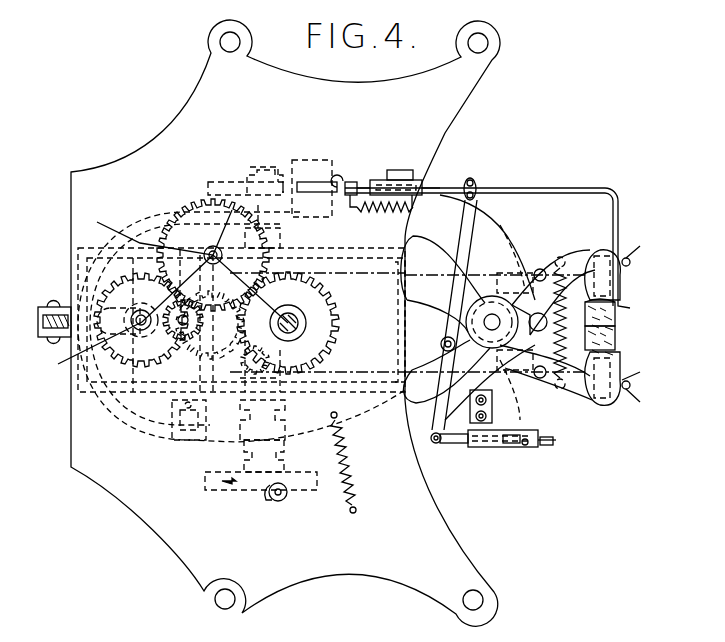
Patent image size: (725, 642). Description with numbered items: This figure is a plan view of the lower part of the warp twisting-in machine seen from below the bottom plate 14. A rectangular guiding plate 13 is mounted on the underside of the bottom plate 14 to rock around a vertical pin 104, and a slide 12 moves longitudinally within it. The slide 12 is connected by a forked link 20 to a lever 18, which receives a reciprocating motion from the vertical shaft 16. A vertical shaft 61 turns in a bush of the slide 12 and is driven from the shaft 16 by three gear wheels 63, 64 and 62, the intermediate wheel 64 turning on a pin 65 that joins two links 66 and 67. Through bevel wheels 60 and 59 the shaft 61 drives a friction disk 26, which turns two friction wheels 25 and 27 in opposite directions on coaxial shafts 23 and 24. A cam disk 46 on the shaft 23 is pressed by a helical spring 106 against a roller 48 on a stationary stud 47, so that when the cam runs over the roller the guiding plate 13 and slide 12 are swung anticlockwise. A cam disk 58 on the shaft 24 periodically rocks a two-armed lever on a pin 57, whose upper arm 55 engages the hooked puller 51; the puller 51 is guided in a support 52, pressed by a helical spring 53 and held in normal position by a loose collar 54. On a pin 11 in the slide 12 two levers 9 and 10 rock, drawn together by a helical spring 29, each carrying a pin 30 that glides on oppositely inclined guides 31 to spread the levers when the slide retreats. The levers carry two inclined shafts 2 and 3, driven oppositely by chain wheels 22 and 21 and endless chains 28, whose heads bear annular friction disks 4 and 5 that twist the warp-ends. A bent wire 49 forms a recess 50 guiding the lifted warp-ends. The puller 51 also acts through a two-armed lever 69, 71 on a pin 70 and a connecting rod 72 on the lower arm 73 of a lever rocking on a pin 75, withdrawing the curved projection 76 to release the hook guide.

The inclined shaft 2 is at (612, 405).
The inclined shaft 3 is at (615, 250).
The friction disk 4 is at (618, 340).
The friction disk 5 is at (620, 316).
The lever 9 is at (572, 385).
The lever 10 is at (575, 262).
The pin 11 is at (484, 318).
The slide 12 is at (428, 280).
The guiding plate 13 is at (80, 252).
The bottom plate 14 is at (426, 127).
The vertical shaft 16 is at (306, 323).
The lever 18 is at (38, 322).
The forked link 20 is at (150, 440).
The chain wheel 21 is at (633, 320).
The chain wheel 22 is at (315, 273).
The shaft 23 is at (245, 452).
The shaft 24 is at (258, 170).
The friction wheel 25 is at (308, 430).
The friction disk 26 is at (215, 340).
The friction wheel 27 is at (310, 248).
The endless chain 28 is at (390, 282).
The helical spring 29 is at (569, 323).
The pin 30 is at (540, 268).
The inclined guide 31 is at (512, 238).
The cam disk 46 is at (212, 491).
The stationary stud 47 is at (287, 494).
The roller 48 is at (272, 504).
The bent wire 49 is at (633, 367).
The recess 50 is at (618, 330).
The puller 51 is at (600, 178).
The support 52 is at (403, 186).
The helical spring 53 is at (381, 211).
The loose collar 54 is at (372, 178).
The upper arm 55 is at (320, 180).
The pin 57 is at (305, 165).
The cam disk 58 is at (285, 175).
The bevel wheel 59 is at (105, 408).
The bevel wheel 60 is at (165, 337).
The vertical shaft 61 is at (133, 290).
The gear wheel 62 is at (100, 292).
The gear wheel 63 is at (335, 303).
The gear wheel 64 is at (210, 200).
The pin 65 is at (178, 262).
The link 66 is at (187, 262).
The link 67 is at (218, 248).
The two-armed lever 69 is at (480, 198).
The pin 70 is at (441, 345).
The two-armed lever 71 is at (445, 415).
The connecting rod 72 is at (470, 446).
The lower arm 73 is at (510, 445).
The pin 75 is at (527, 446).
The curved projection 76 is at (556, 445).
The vertical pin 104 is at (245, 340).
The helical spring 106 is at (354, 460).